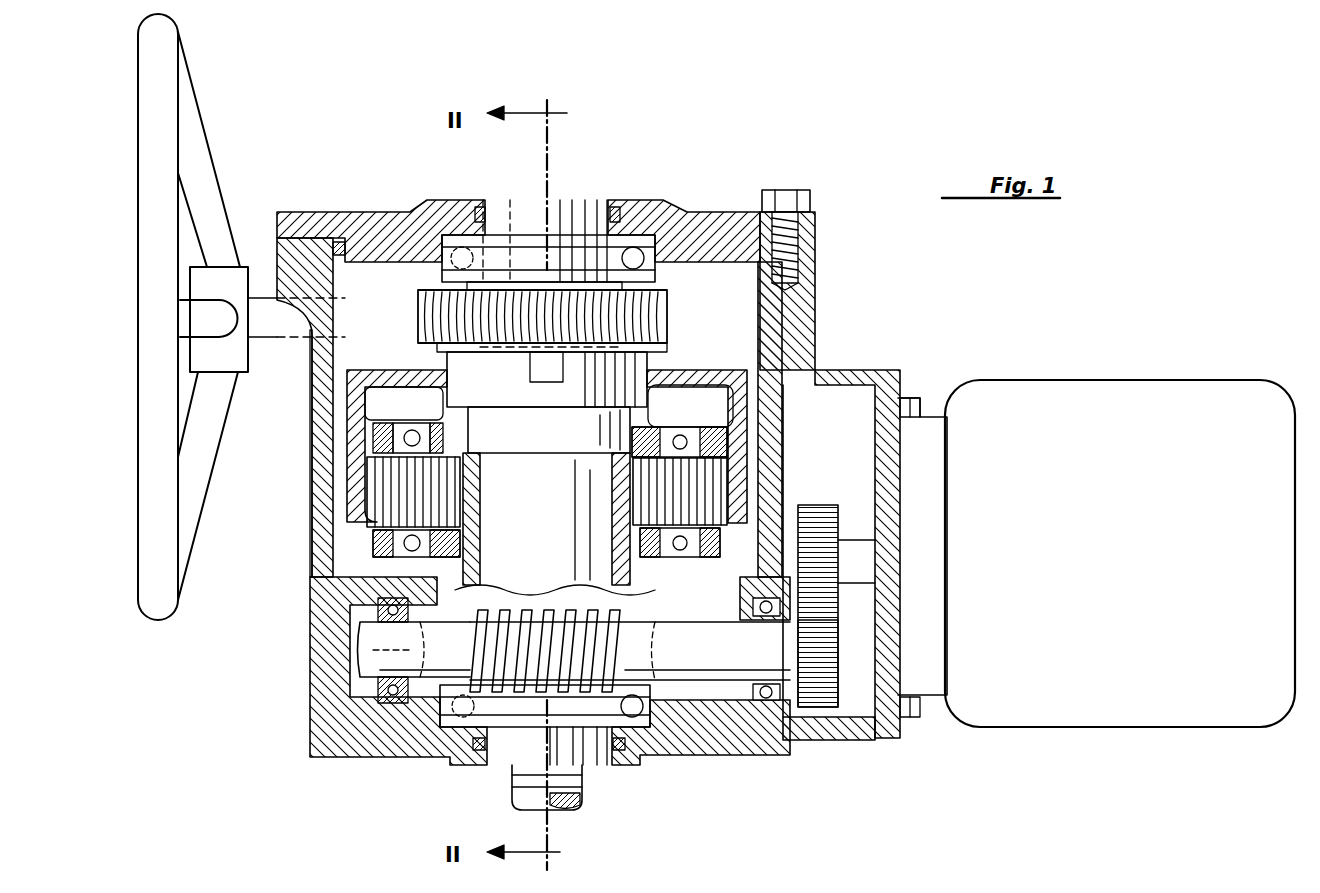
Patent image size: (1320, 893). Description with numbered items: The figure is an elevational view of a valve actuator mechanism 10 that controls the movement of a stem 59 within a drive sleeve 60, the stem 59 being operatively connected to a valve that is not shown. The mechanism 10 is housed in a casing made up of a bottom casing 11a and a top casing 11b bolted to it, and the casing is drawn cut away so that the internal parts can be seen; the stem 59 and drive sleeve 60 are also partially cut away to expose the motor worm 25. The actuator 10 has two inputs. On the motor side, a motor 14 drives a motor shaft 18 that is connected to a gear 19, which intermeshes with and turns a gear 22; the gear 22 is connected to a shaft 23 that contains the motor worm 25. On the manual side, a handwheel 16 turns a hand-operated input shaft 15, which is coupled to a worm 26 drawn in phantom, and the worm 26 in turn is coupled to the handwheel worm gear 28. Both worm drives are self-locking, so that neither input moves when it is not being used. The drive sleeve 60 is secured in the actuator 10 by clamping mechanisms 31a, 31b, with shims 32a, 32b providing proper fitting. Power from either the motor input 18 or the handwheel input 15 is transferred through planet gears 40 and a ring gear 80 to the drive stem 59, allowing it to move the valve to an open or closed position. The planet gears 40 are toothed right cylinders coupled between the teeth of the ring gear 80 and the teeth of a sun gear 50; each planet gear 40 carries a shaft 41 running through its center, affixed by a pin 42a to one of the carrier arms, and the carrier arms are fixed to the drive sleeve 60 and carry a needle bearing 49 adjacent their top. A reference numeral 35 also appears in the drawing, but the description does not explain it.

The valve actuator mechanism 10 is at (848, 160).
The bottom casing 11a is at (310, 676).
The top casing 11b is at (705, 205).
The motor 14 is at (978, 398).
The hand-operated input shaft 15 is at (370, 300).
The handwheel 16 is at (158, 133).
The motor shaft 18 is at (853, 540).
The gear 19 is at (813, 505).
The gear 22 is at (832, 652).
The shaft 23 is at (705, 640).
The motor worm 25 is at (548, 640).
The worm 26 is at (510, 215).
The handwheel worm gear 28 is at (665, 315).
The clamping mechanism 31a is at (500, 705).
The clamping mechanism 31b is at (462, 243).
The shim 32a is at (625, 765).
The shim 32b is at (617, 207).
The input shaft 35 is at (355, 650).
The planet gear 40 is at (715, 410).
The shaft 41 is at (690, 560).
The pin 42a is at (680, 435).
The needle bearing 49 is at (437, 400).
The sun gear 50 is at (440, 590).
The stem 59 is at (563, 797).
The drive sleeve 60 is at (505, 753).
The ring gear 80 is at (688, 368).